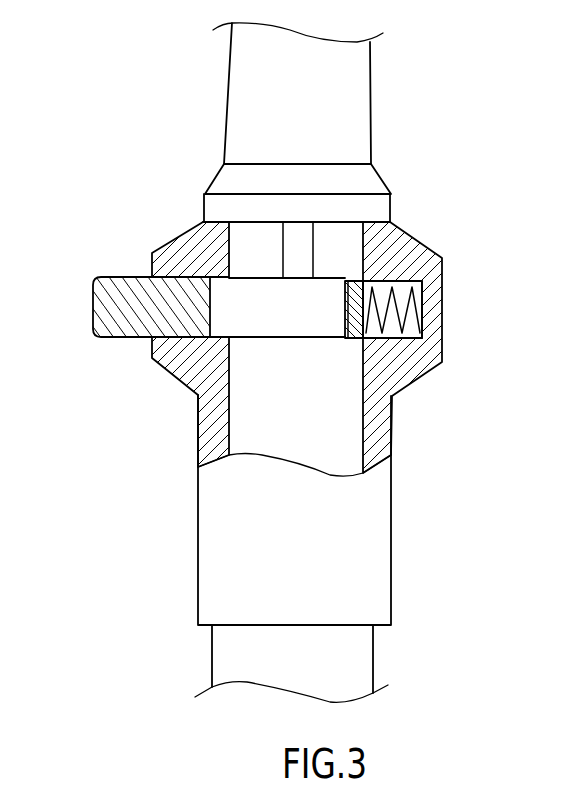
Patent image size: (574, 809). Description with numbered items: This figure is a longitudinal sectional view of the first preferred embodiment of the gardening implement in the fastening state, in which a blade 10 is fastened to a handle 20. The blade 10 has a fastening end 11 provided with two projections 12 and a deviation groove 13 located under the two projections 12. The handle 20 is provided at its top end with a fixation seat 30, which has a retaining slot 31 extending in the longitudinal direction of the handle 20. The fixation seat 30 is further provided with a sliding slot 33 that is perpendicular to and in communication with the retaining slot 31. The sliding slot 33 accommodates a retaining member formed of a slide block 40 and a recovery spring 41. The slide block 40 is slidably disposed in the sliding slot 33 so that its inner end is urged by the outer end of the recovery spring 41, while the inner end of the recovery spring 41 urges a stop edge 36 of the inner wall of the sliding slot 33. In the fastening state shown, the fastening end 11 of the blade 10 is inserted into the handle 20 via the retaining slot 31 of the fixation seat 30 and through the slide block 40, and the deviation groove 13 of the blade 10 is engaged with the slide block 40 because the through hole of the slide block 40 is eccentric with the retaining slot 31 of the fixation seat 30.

The blade 10 is at (357, 62).
The fastening end 11 is at (350, 442).
The projections 12 is at (298, 237).
The deviation groove 13 is at (365, 292).
The handle 20 is at (360, 655).
The fixation seat 30 is at (443, 266).
The retaining slot 31 is at (147, 286).
The sliding slot 33 is at (140, 285).
The stop edge 36 is at (403, 337).
The slide block 40 is at (137, 325).
The recovery spring 41 is at (415, 312).